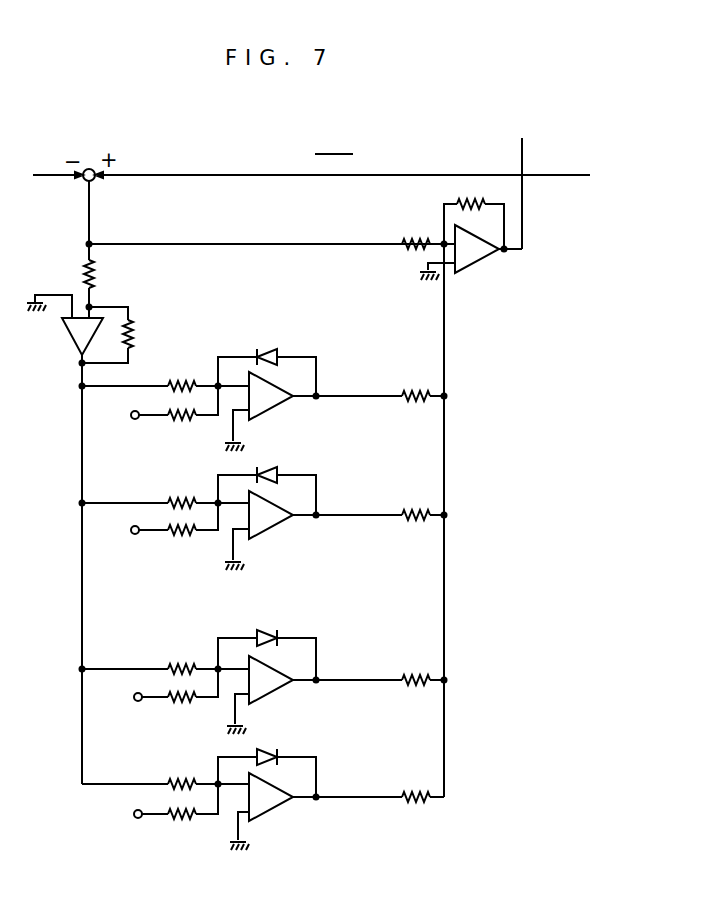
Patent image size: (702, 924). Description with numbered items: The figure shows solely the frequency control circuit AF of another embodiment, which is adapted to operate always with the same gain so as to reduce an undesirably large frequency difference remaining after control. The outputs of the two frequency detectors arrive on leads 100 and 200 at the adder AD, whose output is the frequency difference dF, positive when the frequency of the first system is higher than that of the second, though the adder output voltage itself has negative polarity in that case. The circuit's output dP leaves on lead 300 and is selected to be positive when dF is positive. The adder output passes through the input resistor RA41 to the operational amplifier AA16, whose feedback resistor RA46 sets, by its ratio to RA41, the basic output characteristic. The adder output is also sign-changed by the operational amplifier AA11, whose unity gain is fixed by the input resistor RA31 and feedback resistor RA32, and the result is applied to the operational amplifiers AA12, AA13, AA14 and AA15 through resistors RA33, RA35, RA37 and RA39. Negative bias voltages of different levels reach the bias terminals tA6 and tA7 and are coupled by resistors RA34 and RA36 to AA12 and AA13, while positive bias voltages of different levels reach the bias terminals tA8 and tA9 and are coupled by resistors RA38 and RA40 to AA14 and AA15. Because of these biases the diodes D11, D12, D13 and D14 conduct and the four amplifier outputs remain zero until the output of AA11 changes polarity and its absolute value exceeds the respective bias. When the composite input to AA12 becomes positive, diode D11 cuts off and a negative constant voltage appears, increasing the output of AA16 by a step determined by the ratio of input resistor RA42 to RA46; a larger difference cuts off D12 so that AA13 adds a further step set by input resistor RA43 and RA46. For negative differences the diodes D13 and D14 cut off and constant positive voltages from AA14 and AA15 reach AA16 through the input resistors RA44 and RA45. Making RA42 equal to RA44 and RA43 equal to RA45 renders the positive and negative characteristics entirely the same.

The frequency control circuit AF is at (334, 143).
The adder AD is at (89, 168).
The lead 100 is at (62, 176).
The lead 200 is at (563, 177).
The lead 300 is at (523, 153).
The frequency difference ΔF dF is at (96, 236).
The output ΔP dP is at (528, 236).
The input resistor RA31 is at (110, 288).
The feedback resistor RA32 is at (152, 326).
The resistor RA33 is at (158, 391).
The resistor RA34 is at (198, 420).
The resistor RA35 is at (158, 508).
The resistor RA36 is at (198, 535).
The resistor RA37 is at (158, 674).
The resistor RA38 is at (198, 702).
The resistor RA39 is at (160, 789).
The resistor RA40 is at (198, 819).
The input resistor RA41 is at (392, 244).
The input resistor RA42 is at (394, 399).
The input resistor RA43 is at (394, 517).
The input resistor RA44 is at (394, 682).
The input resistor RA45 is at (394, 800).
The feedback resistor RA46 is at (456, 204).
The operational amplifier AA11 is at (80, 353).
The operational amplifier AA12 is at (262, 404).
The operational amplifier AA13 is at (262, 523).
The operational amplifier AA14 is at (262, 688).
The operational amplifier AA15 is at (272, 820).
The operational amplifier AA16 is at (480, 262).
The diode D11 is at (264, 353).
The diode D12 is at (276, 473).
The diode D13 is at (262, 635).
The diode D14 is at (264, 755).
The bias terminal tA6 is at (131, 415).
The bias terminal tA7 is at (131, 530).
The bias terminal tA8 is at (134, 697).
The bias terminal tA9 is at (134, 814).